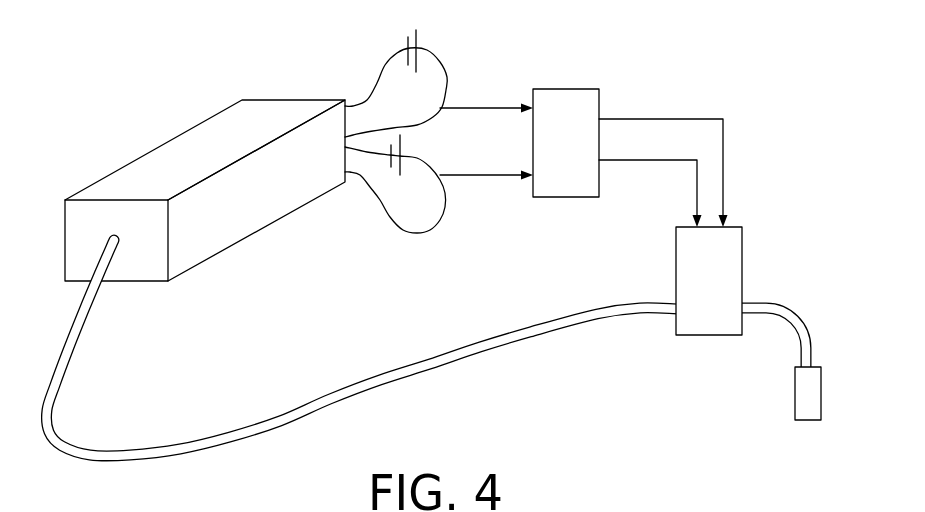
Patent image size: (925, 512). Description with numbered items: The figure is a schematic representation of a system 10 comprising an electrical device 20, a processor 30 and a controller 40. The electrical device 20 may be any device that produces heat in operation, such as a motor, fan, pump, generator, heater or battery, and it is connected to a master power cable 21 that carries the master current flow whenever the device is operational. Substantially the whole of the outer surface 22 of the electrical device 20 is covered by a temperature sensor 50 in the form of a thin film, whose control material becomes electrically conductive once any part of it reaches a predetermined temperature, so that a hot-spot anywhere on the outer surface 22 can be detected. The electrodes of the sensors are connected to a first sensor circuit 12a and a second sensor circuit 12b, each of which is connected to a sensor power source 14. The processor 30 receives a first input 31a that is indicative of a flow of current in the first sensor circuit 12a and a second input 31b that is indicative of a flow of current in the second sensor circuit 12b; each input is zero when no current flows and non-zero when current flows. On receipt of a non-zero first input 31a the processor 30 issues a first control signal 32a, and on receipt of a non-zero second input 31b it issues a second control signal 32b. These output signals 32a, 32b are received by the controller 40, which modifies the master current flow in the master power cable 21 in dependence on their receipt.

The system 10 is at (117, 51).
The first sensor circuit 12a is at (380, 78).
The second sensor circuit 12b is at (407, 234).
The sensor power source 14 is at (420, 37).
The electrical device 20 is at (250, 217).
The master power cable 21 is at (318, 400).
The outer surface 22 is at (197, 137).
The processor 30 is at (568, 100).
The first input 31a is at (488, 105).
The second input 31b is at (492, 180).
The first control signal 32a is at (658, 118).
The second control signal 32b is at (645, 162).
The controller 40 is at (730, 262).
The temperature sensor 50 is at (108, 183).